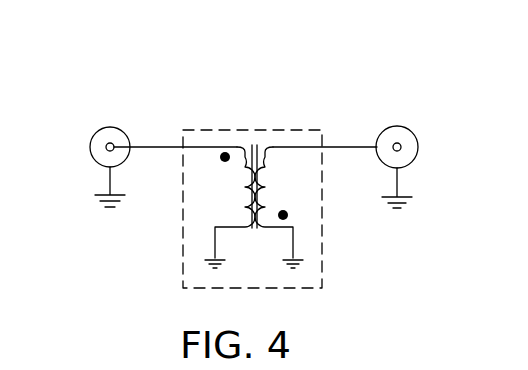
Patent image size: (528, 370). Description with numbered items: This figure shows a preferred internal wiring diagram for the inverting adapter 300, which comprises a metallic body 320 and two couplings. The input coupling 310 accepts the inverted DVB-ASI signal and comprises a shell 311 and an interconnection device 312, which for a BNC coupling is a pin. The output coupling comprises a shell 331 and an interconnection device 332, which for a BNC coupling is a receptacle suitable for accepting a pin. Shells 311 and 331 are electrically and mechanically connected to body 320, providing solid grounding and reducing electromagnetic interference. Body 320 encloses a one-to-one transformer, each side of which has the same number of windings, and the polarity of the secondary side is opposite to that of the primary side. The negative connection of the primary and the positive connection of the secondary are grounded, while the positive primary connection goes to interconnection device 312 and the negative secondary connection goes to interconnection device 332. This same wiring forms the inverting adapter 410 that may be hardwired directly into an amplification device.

The inverting adapter 300 is at (376, 45).
The input coupling 310 is at (107, 116).
The shell 311 is at (119, 127).
The interconnection device 312 is at (105, 152).
The metallic body 320 is at (409, 114).
The shell 331 is at (414, 132).
The interconnection device 332 is at (402, 148).
The inverting adapter 410 is at (323, 207).